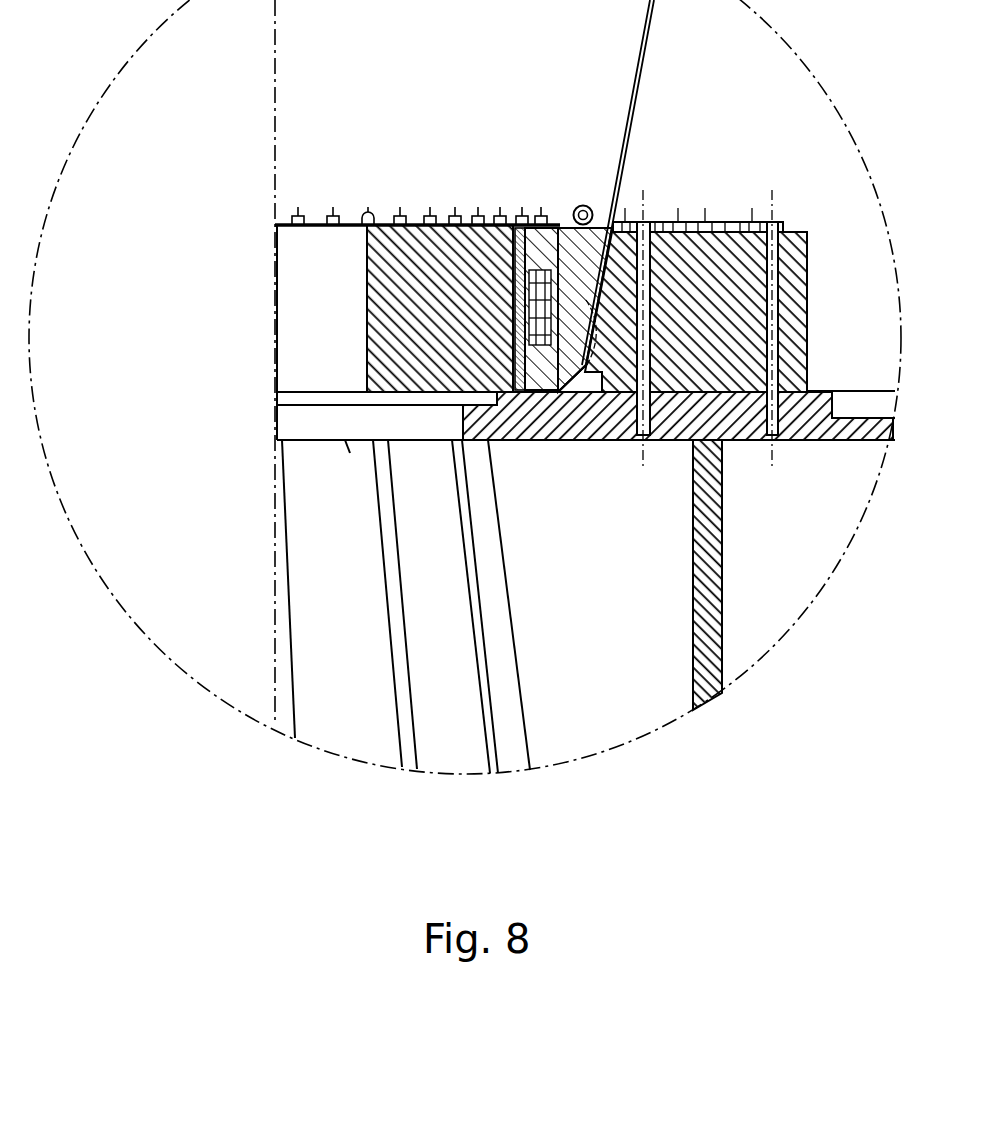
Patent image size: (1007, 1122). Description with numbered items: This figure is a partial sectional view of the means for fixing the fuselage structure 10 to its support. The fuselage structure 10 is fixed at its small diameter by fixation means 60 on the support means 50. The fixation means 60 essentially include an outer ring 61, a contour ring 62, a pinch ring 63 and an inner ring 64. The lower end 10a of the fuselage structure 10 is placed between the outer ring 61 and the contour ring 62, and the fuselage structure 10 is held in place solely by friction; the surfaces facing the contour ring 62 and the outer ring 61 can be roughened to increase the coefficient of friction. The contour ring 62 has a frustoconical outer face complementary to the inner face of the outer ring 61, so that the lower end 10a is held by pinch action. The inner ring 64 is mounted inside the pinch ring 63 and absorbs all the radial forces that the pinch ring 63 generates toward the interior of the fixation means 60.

The fuselage structure 10 is at (645, 65).
The lower end of fuselage structure 10a is at (553, 392).
The support means 50 is at (597, 470).
The fixation means 60 is at (614, 305).
The outer ring 61 is at (710, 232).
The contour ring 62 is at (598, 228).
The pinch ring 63 is at (545, 240).
The inner ring 64 is at (414, 243).